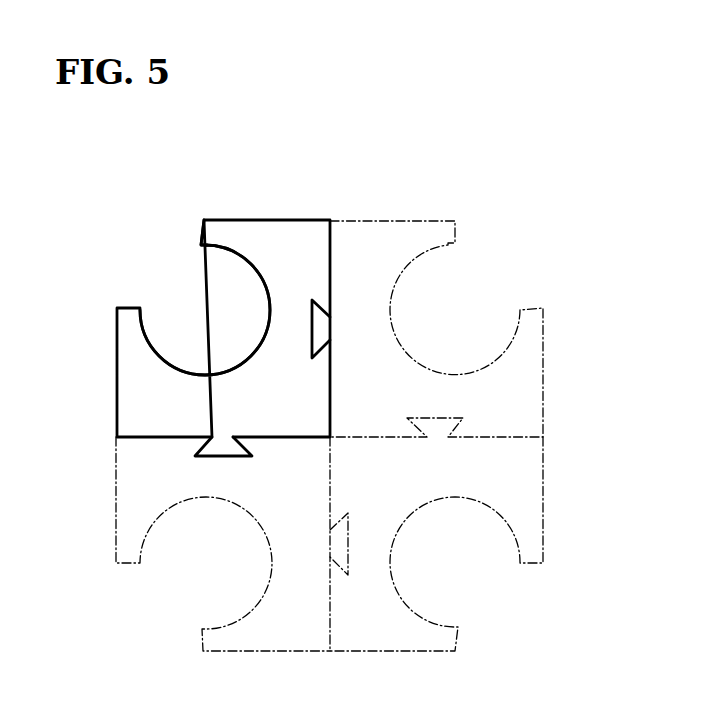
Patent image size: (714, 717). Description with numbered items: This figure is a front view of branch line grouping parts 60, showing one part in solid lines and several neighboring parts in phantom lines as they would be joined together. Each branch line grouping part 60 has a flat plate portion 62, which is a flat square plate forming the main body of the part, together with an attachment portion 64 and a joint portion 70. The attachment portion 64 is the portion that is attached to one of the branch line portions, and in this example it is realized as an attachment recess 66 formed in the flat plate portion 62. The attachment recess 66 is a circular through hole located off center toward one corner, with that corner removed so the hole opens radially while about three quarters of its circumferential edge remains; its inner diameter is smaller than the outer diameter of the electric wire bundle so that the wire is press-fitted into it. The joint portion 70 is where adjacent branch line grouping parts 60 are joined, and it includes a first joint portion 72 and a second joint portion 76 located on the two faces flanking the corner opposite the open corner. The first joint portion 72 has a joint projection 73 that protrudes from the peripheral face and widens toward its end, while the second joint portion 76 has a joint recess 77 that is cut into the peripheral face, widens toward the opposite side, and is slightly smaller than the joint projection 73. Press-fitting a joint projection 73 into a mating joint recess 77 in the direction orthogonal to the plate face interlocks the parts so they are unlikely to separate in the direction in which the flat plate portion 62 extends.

The branch line grouping part 60 is at (339, 427).
The flat plate portion 62 is at (138, 407).
The attachment portion 64 is at (205, 246).
The attachment recess 66 is at (167, 292).
The joint portion 70 is at (425, 165).
The first joint portion 72 is at (223, 443).
The joint projection 73 is at (321, 309).
The second joint portion 76 is at (320, 323).
The joint recess 77 is at (314, 368).